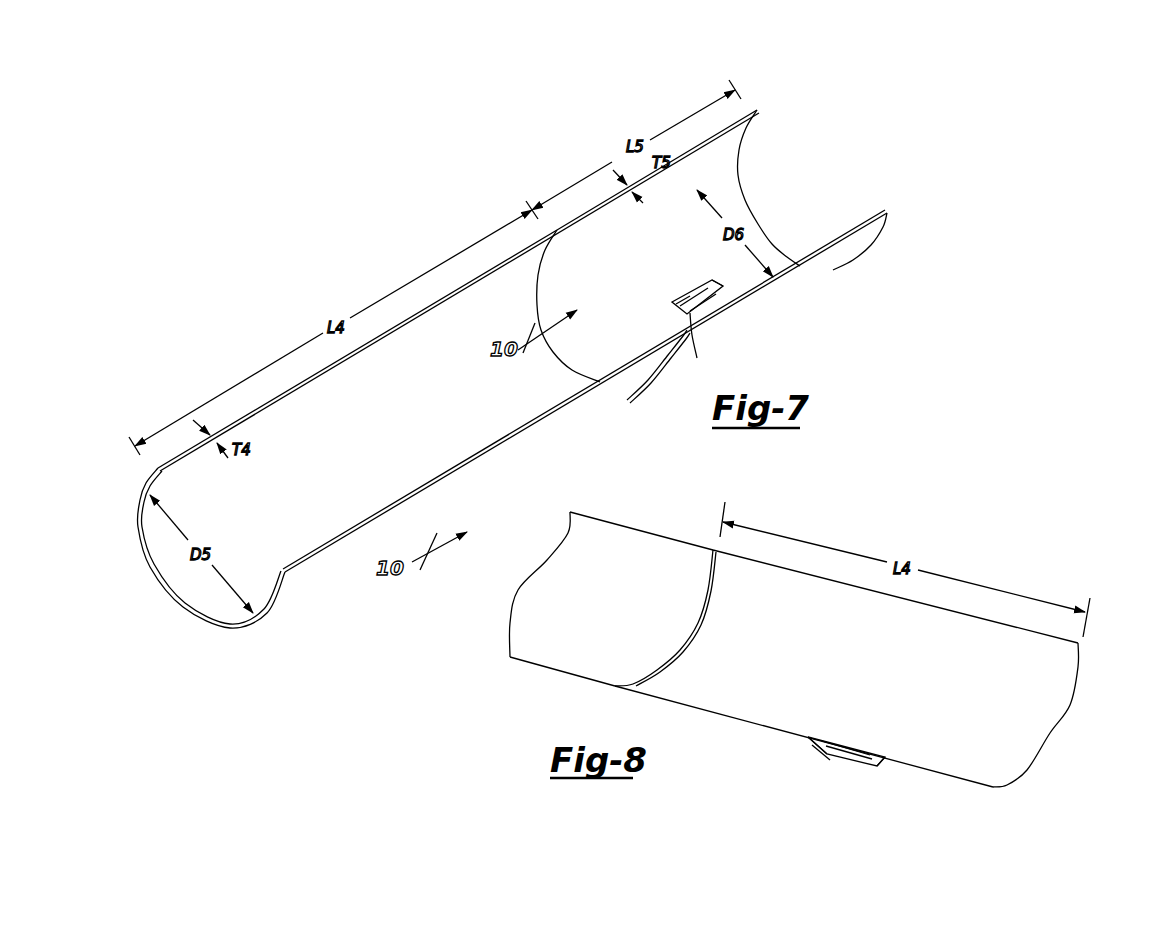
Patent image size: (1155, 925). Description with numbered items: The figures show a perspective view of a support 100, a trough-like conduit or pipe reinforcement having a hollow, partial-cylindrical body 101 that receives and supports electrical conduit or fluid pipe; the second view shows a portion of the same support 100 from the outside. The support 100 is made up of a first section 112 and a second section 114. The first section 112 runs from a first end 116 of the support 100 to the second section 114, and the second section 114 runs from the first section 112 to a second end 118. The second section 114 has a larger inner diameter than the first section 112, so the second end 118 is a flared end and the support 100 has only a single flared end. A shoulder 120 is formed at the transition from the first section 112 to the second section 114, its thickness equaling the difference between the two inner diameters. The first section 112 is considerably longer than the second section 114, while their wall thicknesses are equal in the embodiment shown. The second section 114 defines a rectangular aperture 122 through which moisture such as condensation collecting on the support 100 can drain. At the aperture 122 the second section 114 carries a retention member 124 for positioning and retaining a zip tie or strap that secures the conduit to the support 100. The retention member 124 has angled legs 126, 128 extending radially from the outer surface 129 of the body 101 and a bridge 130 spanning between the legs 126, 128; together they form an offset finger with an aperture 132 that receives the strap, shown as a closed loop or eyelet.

In FIG. 7, the support 100 is at (499, 369).
In FIG. 8, the support 100 is at (809, 654).
In FIG. 7, the partial-cylindrical body 101 is at (322, 437).
In FIG. 7, the first section 112 is at (290, 410).
In FIG. 8, the first section 112 is at (535, 652).
In FIG. 7, the second section 114 is at (713, 150).
In FIG. 8, the second section 114 is at (851, 668).
In FIG. 7, the first end 116 is at (166, 592).
In FIG. 7, the second end 118 is at (745, 187).
In FIG. 8, the second end 118 is at (1062, 727).
In FIG. 7, the shoulder 120 is at (558, 230).
In FIG. 8, the shoulder 120 is at (665, 618).
In FIG. 7, the rectangular aperture 122 is at (696, 300).
In FIG. 8, the rectangular aperture 122 is at (836, 762).
In FIG. 7, the retention member 124 is at (698, 282).
In FIG. 8, the retention member 124 is at (810, 753).
In FIG. 7, the angled leg 126 is at (697, 358).
In FIG. 8, the angled leg 126 is at (807, 743).
In FIG. 7, the angled leg 128 is at (724, 288).
In FIG. 8, the angled leg 128 is at (887, 763).
In FIG. 8, the outer surface 129 is at (978, 758).
In FIG. 7, the bridge 130 is at (680, 293).
In FIG. 8, the bridge 130 is at (833, 758).
In FIG. 8, the aperture 132 is at (863, 763).